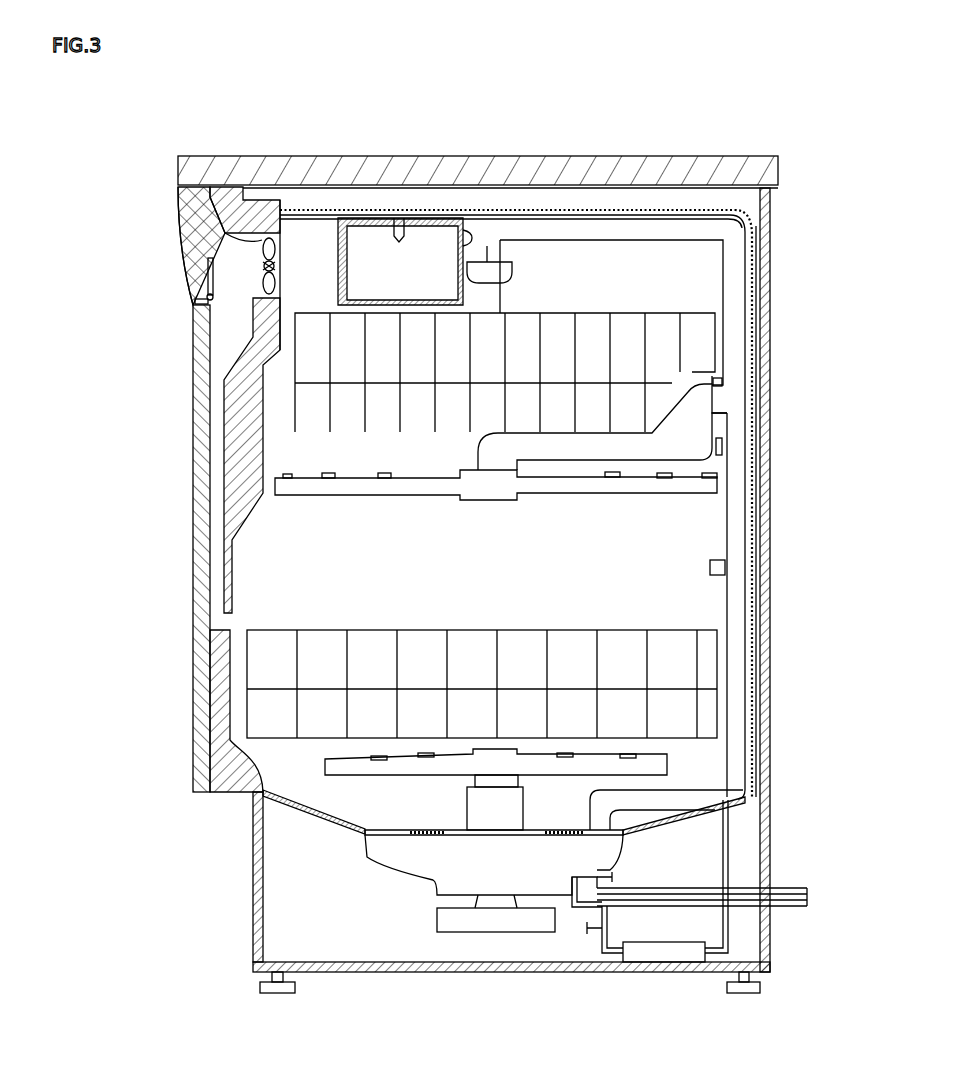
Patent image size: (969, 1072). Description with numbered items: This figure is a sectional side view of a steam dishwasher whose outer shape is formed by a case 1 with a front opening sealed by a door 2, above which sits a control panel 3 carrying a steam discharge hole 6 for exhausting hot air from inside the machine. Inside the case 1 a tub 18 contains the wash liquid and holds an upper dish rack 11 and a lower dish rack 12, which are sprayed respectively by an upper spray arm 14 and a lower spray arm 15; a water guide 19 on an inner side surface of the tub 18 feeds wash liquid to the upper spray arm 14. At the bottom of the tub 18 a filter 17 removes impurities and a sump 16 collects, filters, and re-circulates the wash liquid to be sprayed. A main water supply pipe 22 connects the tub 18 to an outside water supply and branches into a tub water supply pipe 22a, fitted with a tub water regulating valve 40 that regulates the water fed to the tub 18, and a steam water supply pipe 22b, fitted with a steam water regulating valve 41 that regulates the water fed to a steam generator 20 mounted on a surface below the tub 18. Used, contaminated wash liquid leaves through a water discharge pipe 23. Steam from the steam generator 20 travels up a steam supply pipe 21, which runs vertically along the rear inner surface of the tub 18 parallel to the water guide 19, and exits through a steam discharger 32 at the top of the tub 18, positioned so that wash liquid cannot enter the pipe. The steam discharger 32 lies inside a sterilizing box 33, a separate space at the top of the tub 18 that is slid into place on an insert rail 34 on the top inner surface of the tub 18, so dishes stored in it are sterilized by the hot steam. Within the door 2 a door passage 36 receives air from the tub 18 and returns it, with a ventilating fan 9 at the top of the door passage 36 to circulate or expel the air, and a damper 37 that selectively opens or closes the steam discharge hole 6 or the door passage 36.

The case 1 is at (771, 577).
The door 2 is at (200, 487).
The control panel 3 is at (184, 227).
The steam discharge hole 6 is at (194, 290).
The ventilating fan 9 is at (246, 186).
The upper dish rack 11 is at (292, 370).
The lower dish rack 12 is at (247, 662).
The upper spray arm 14 is at (622, 497).
The lower spray arm 15 is at (640, 766).
The sump 16 is at (645, 830).
The filter 17 is at (418, 836).
The tub 18 is at (757, 620).
The water guide 19 is at (740, 497).
The steam generator 20 is at (648, 955).
The steam supply pipe 21 is at (770, 447).
The main water supply pipe 22 is at (778, 887).
The tub water supply pipe 22a is at (574, 879).
The steam water supply pipe 22b is at (609, 954).
The water discharge pipe 23 is at (788, 907).
The steam discharger 32 is at (400, 226).
The sterilizing box 33 is at (486, 236).
The insert rail 34 is at (376, 226).
The door passage 36 is at (216, 570).
The damper 37 is at (204, 302).
The tub water regulating valve 40 is at (612, 877).
The steam water regulating valve 41 is at (587, 928).